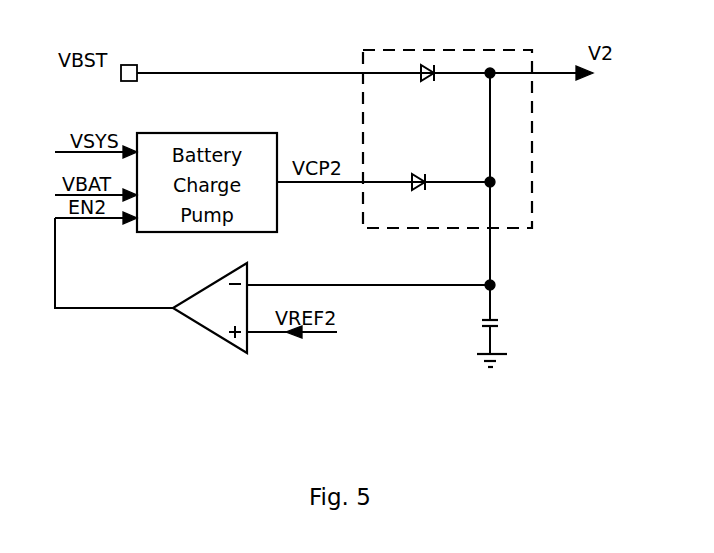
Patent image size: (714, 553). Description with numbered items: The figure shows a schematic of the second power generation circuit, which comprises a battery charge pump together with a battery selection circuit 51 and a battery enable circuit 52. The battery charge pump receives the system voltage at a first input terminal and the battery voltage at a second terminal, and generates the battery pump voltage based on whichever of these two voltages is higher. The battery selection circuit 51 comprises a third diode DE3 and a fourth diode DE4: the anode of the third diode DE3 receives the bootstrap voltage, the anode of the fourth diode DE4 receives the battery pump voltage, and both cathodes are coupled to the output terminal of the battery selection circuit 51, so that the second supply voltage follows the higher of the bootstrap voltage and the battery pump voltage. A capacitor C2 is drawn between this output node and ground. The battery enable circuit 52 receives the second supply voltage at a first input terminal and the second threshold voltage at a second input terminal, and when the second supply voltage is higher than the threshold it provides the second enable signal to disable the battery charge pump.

The battery selection circuit 51 is at (465, 155).
The battery enable circuit 52 is at (210, 308).
The third diode DE3 is at (436, 88).
The fourth diode DE4 is at (427, 197).
The capacitor C2 is at (512, 316).